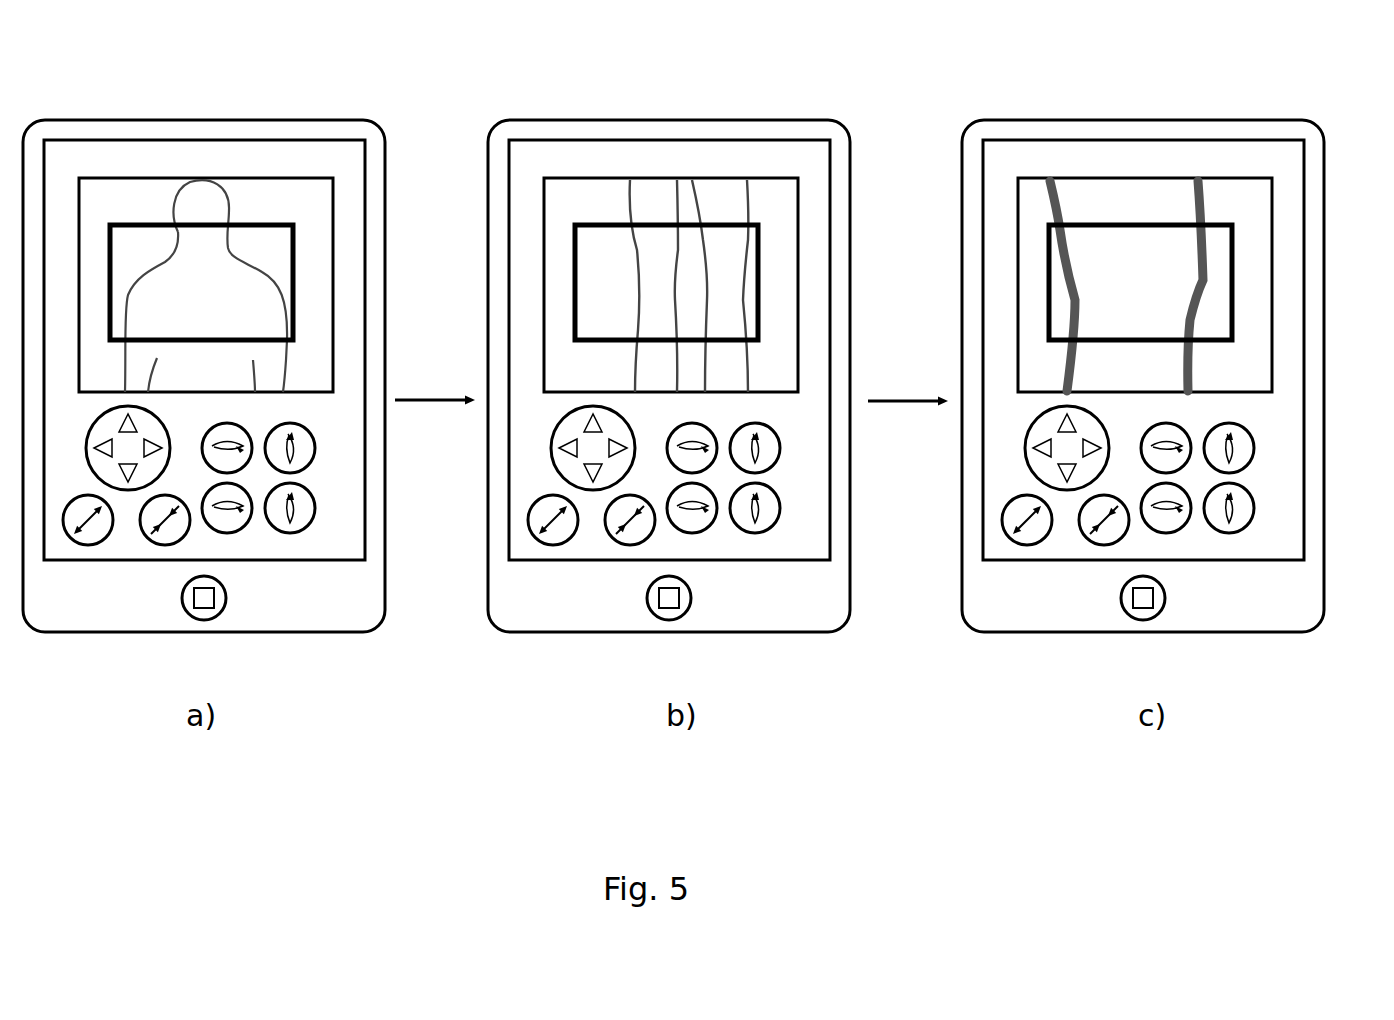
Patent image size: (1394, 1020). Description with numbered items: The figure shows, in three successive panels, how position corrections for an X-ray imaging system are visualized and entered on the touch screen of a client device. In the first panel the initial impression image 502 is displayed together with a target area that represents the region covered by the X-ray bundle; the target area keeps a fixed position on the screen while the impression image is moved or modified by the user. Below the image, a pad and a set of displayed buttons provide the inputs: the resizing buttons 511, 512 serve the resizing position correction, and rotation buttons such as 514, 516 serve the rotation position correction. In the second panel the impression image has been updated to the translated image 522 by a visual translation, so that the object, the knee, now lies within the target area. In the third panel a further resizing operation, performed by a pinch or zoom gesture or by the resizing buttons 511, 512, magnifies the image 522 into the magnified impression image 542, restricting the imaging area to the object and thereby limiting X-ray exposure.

The initial impression image 502 is at (128, 178).
The resizing button 511 is at (86, 546).
The resizing button 512 is at (148, 544).
The rotation button 514 is at (316, 508).
The rotation button 516 is at (316, 448).
The translated impression image 522 is at (671, 234).
The magnified impression image 542 is at (1145, 234).